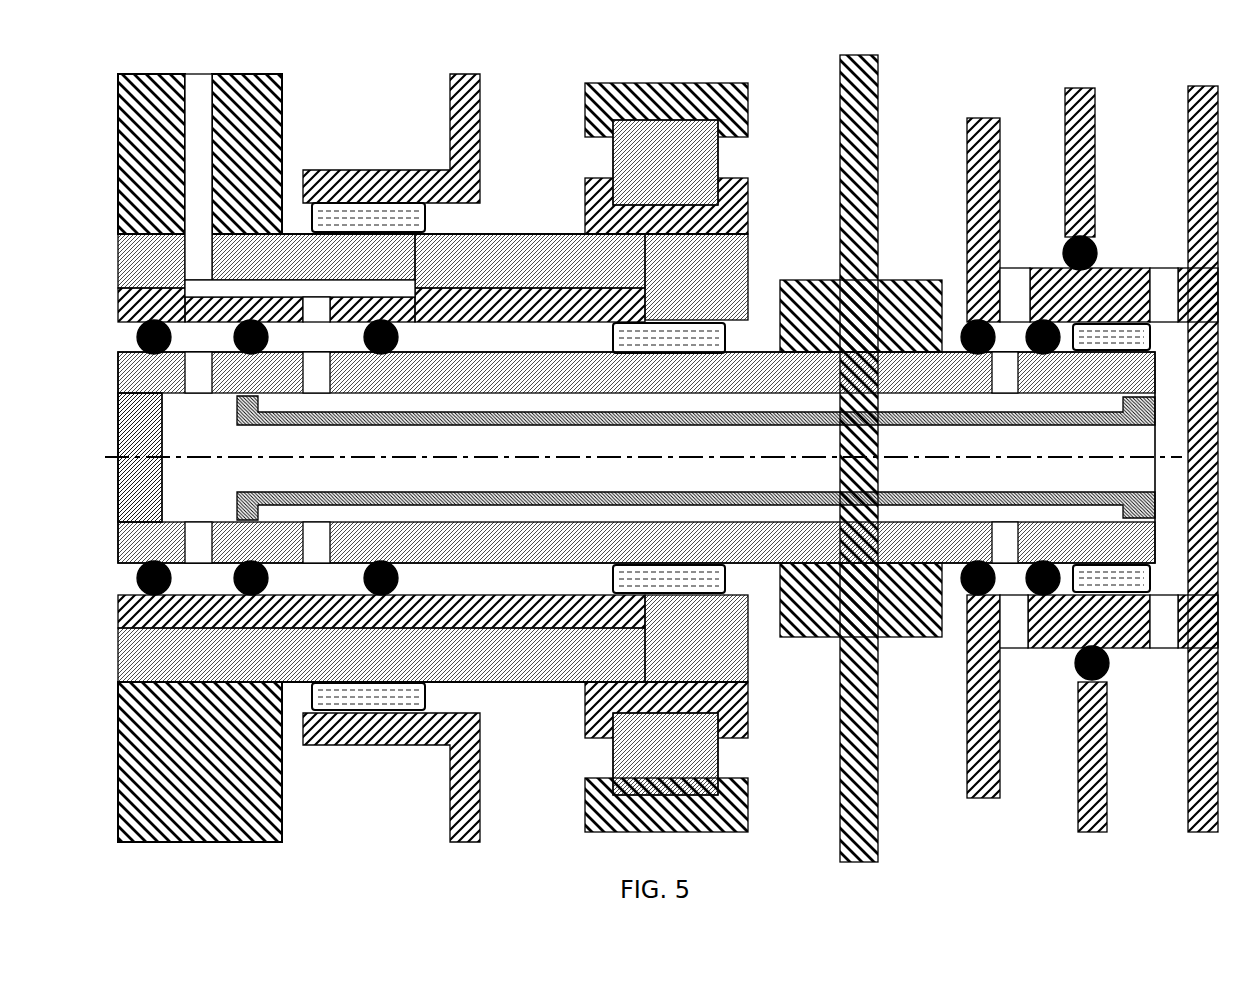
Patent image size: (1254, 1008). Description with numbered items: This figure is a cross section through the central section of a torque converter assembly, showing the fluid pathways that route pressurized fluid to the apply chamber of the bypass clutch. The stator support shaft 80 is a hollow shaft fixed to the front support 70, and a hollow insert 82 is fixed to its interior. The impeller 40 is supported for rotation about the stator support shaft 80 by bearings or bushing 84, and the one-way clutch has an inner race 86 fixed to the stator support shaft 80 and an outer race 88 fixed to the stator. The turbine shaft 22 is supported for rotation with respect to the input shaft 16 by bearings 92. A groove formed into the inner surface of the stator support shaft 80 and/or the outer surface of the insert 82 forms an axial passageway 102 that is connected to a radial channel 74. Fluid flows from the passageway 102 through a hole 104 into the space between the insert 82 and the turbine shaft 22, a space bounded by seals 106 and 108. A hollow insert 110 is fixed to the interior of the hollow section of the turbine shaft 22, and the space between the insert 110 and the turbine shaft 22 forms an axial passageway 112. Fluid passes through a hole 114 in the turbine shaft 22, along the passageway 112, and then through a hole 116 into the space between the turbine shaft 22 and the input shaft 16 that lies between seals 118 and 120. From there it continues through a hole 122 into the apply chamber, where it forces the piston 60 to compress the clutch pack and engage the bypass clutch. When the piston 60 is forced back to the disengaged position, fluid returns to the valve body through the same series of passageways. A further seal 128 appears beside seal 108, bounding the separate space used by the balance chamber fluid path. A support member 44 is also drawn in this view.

The transmission input shaft 16 is at (1188, 142).
The turbine shaft 22 is at (748, 567).
The impeller 40 is at (480, 118).
The support plate 44 is at (878, 125).
The piston 60 is at (1065, 92).
The front support 70 is at (282, 800).
The radial channel 74 is at (200, 120).
The stator support shaft 80 is at (497, 683).
The hollow insert 82 is at (298, 622).
The bearings or bushing 84 is at (390, 203).
The inner race 86 is at (748, 205).
The outer race 88 is at (585, 106).
The bearings 92 is at (1105, 593).
The axial passageway 102 is at (281, 278).
The hole 104 is at (320, 310).
The seal 106 is at (380, 355).
The seal 108 is at (243, 355).
The hollow insert 110 is at (928, 595).
The axial passageway 112 is at (727, 391).
The hole 114 is at (318, 536).
The hole 116 is at (1005, 386).
The seal 118 is at (982, 560).
The seal 120 is at (1043, 563).
The hole 122 is at (1013, 632).
The seal 128 is at (160, 357).